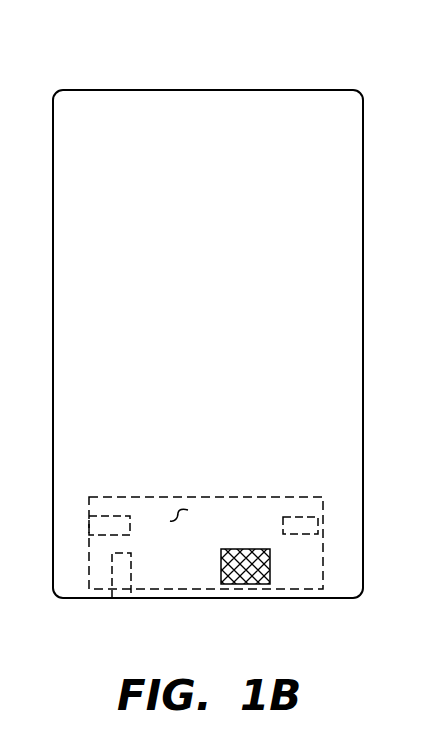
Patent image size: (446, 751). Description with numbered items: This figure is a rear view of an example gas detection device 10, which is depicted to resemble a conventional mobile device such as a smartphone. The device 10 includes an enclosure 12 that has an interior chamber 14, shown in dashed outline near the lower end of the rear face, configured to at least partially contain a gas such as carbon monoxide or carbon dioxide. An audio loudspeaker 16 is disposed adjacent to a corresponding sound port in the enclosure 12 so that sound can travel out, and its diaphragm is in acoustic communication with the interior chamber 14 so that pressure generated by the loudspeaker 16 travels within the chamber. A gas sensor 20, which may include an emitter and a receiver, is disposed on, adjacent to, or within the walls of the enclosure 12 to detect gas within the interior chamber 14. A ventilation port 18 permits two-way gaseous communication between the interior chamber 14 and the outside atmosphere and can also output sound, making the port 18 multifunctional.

The gas detection device 10 is at (169, 89).
The enclosure 12 is at (263, 497).
The interior chamber 14 is at (178, 508).
The audio loudspeaker 16 is at (249, 584).
The ventilation port 18 is at (122, 600).
The gas sensor 20 is at (117, 515).